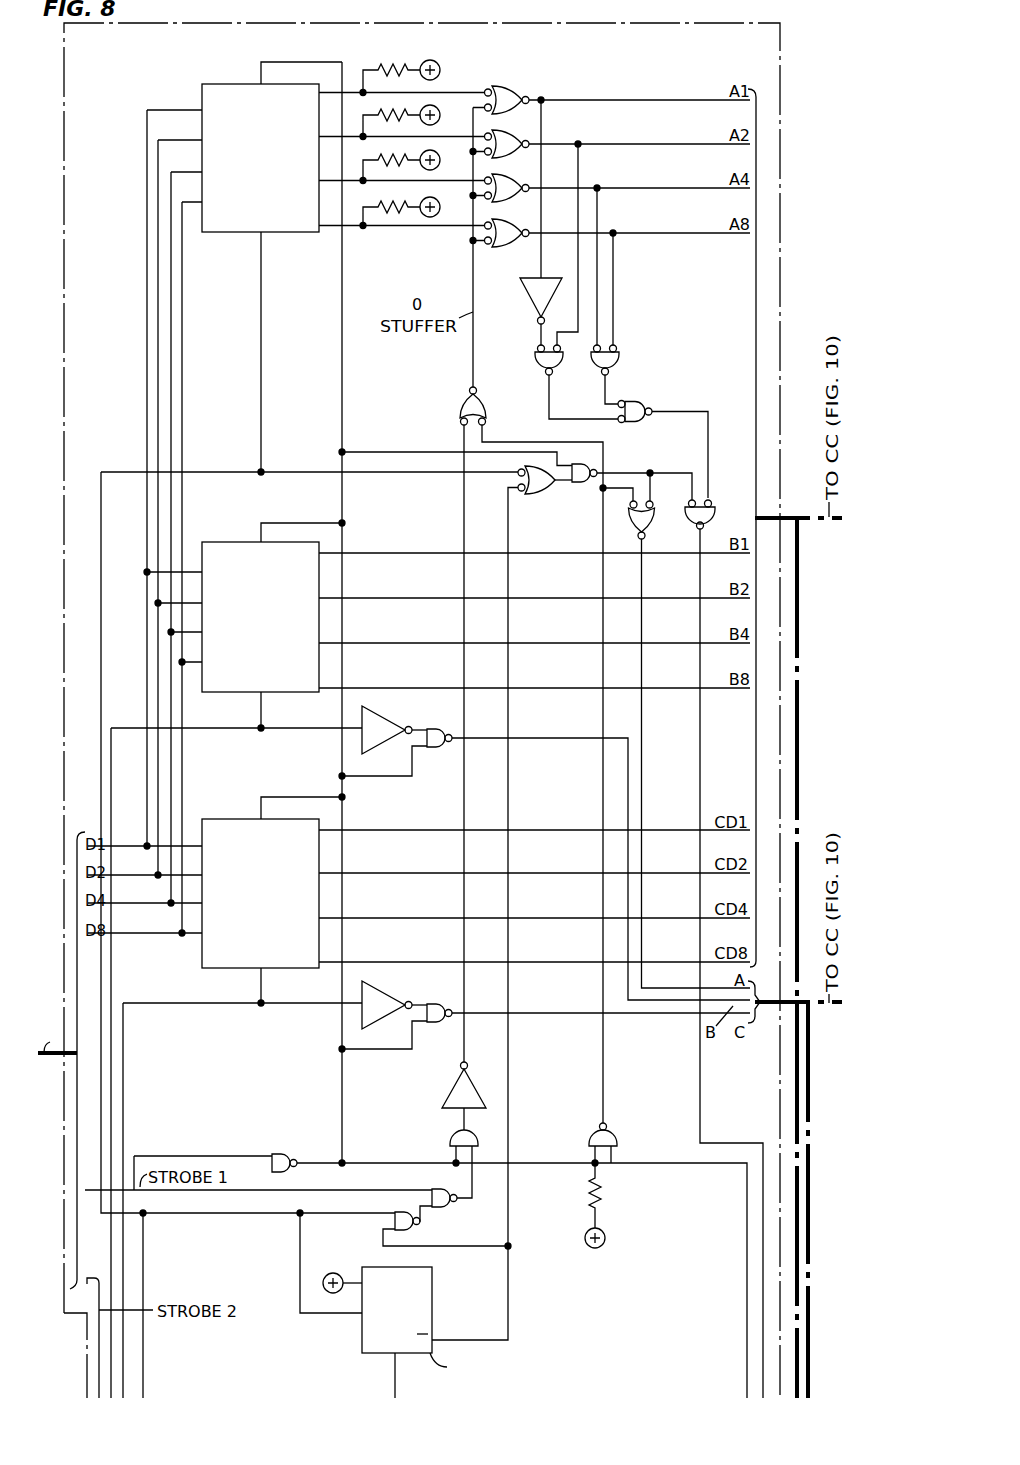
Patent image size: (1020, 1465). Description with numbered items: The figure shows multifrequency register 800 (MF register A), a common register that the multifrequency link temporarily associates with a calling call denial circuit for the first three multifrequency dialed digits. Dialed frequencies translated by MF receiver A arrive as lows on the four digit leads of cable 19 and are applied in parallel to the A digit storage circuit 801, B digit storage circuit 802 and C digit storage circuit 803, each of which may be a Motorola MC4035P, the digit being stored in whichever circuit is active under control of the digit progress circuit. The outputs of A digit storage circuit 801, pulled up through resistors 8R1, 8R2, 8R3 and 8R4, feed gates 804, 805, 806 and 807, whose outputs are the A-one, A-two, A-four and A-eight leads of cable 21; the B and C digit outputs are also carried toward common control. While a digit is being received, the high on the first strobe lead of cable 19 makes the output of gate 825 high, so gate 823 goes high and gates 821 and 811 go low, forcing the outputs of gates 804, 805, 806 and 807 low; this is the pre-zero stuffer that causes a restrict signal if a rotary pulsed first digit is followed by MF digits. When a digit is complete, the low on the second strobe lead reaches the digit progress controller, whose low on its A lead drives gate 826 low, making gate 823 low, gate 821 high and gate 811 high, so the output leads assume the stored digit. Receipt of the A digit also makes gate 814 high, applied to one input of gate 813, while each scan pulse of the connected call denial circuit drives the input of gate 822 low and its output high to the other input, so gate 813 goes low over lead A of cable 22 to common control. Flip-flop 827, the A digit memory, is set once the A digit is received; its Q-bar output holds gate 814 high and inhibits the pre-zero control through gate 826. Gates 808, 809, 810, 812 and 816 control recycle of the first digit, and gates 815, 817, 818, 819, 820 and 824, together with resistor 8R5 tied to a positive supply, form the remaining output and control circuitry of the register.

The multifrequency register 800 is at (598, 24).
The A digit storage circuit 801 is at (225, 84).
The B digit storage circuit 802 is at (222, 542).
The C digit storage circuit 803 is at (226, 818).
The gate 804 is at (509, 93).
The gate 805 is at (500, 137).
The gate 806 is at (500, 181).
The gate 807 is at (500, 226).
The gate 808 is at (531, 300).
The gate 809 is at (534, 359).
The gate 810 is at (621, 359).
The gate 811 is at (458, 407).
The gate 812 is at (632, 401).
The gate 813 is at (572, 483).
The gate 814 is at (530, 496).
The gate 815 is at (648, 530).
The gate 816 is at (714, 511).
The gate 817 is at (380, 714).
The gate 818 is at (436, 756).
The gate 819 is at (380, 989).
The gate 820 is at (436, 1004).
The gate 821 is at (448, 1087).
The gate 822 is at (273, 1143).
The gate 823 is at (449, 1139).
The gate 824 is at (589, 1134).
The gate 825 is at (430, 1188).
The gate 826 is at (414, 1229).
The flip-flop 827 is at (358, 1348).
The resistor 8R1 is at (378, 65).
The resistor 8R2 is at (378, 110).
The resistor 8R3 is at (378, 155).
The resistor 8R4 is at (378, 200).
The resistor 8R5 is at (607, 1192).
The cable 19 is at (48, 1061).
The cable 21 is at (812, 522).
The cable 22 is at (818, 1007).